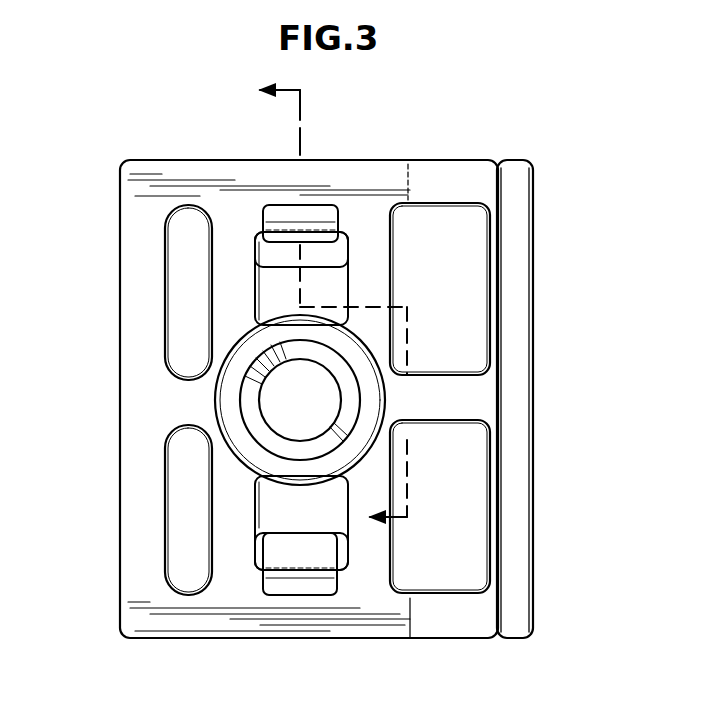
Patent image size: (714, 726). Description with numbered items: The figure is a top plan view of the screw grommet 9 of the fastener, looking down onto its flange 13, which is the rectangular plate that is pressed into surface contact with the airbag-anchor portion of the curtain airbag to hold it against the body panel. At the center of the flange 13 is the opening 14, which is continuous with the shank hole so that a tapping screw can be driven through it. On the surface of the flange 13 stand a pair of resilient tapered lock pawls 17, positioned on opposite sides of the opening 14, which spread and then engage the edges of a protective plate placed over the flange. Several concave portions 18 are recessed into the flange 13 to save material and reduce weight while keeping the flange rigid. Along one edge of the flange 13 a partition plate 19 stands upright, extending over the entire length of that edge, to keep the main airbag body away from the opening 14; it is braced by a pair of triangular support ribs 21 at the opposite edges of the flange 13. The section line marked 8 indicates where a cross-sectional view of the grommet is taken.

The section line 8- 8 is at (345, 308).
The screw grommet 9 is at (546, 174).
The flange 13 is at (118, 608).
The opening 14 is at (280, 409).
The resilient tapered lock pawls 17 is at (280, 205).
The concave portions 18 is at (273, 288).
The partition plate 19 is at (533, 452).
The triangular support ribs 21 is at (470, 162).